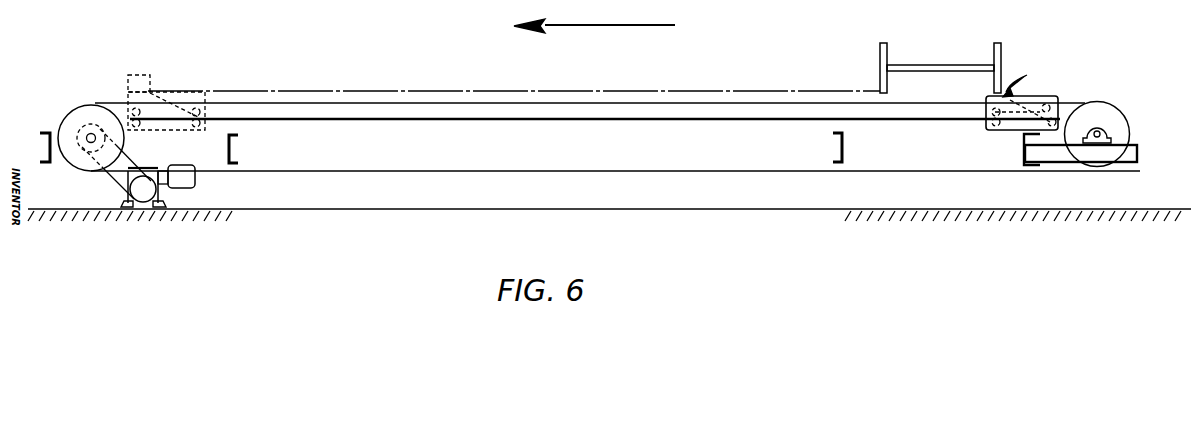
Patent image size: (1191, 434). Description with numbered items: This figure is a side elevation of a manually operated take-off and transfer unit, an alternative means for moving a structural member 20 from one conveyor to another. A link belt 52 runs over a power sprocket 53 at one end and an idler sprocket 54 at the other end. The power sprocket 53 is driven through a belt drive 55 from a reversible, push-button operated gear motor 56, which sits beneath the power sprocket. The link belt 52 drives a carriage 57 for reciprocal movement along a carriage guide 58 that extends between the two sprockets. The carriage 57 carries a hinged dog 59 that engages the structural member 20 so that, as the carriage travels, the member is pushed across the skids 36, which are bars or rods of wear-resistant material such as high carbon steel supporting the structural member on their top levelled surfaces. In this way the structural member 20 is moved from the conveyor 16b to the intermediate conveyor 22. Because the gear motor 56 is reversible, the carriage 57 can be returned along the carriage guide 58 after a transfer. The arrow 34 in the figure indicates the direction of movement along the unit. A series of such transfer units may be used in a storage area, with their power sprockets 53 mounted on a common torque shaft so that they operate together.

The direction of travel arrow 34 is at (618, 25).
The skids 36 is at (260, 91).
The link belt 52 is at (617, 104).
The carriage guide 58 is at (481, 117).
The conveyor 16b is at (615, 154).
The structural member 20 is at (878, 56).
The carriage 57 is at (1040, 99).
The idler sprocket 54 is at (1128, 115).
The power sprocket 53 is at (94, 106).
The hinged dog 59 is at (86, 134).
The belt drive 55 is at (112, 172).
The intermediate conveyor 22 is at (182, 159).
The gear motor 56 is at (196, 175).